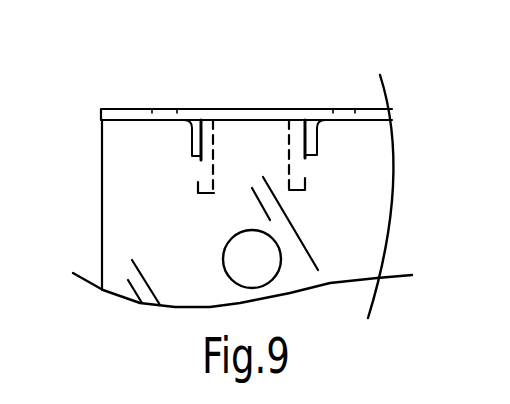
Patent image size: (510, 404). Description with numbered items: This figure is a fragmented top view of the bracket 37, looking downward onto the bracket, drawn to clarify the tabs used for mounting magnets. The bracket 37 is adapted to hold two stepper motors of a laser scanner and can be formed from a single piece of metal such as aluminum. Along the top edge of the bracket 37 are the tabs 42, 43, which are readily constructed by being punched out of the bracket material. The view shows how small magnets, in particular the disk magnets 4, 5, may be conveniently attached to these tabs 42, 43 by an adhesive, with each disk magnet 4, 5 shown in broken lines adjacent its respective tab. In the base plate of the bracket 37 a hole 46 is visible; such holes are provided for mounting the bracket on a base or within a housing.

The bracket 37 is at (230, 98).
The tab 42 is at (191, 134).
The tab 43 is at (313, 133).
The disk magnet 4 is at (197, 174).
The disk magnet 5 is at (307, 177).
The hole 46 is at (229, 240).